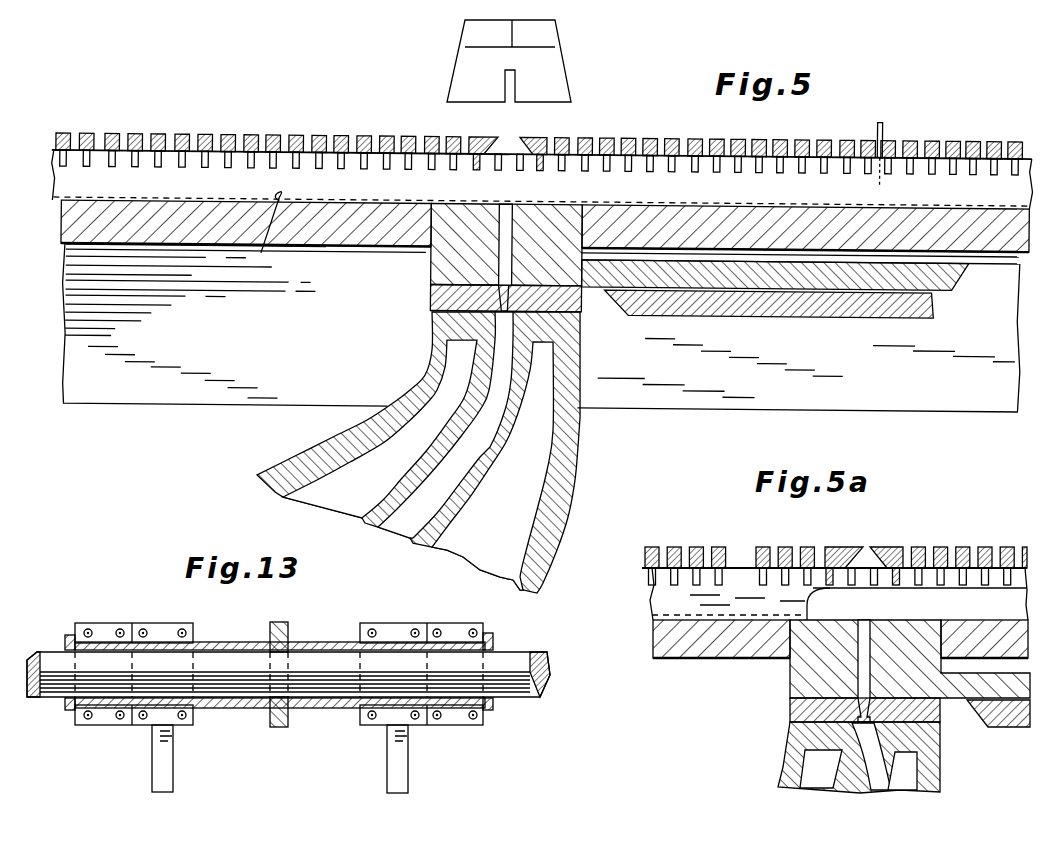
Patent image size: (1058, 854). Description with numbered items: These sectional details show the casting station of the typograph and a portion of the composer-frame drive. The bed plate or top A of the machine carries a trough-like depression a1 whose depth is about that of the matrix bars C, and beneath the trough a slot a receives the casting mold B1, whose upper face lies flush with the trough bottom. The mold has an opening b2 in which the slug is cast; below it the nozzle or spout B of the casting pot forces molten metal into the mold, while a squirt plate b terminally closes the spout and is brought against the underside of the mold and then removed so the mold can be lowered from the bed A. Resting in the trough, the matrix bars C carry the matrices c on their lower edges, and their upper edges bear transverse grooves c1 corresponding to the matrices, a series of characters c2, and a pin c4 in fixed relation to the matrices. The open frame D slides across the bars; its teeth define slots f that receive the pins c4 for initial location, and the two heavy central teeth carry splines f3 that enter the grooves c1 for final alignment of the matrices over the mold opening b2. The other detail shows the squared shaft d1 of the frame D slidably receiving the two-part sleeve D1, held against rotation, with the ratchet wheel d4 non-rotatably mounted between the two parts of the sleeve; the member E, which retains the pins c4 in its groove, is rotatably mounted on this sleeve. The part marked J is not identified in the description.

In FIG. 5, the tool / punch J is at (447, 72).
In FIG. 5, the open frame D is at (539, 146).
In FIG. 5A, the open frame D is at (779, 548).
In FIG. 5, the transversely disposed member E is at (144, 142).
In FIG. 5A, the transversely disposed member E is at (656, 550).
In FIG. 5, the slot between teeth f is at (224, 142).
In FIG. 5A, the slot between teeth f is at (969, 562).
In FIG. 5, the splines f3 is at (507, 169).
In FIG. 5A, the splines f3 is at (835, 572).
In FIG. 5, the transverse grooves c1 is at (359, 167).
In FIG. 5A, the transverse grooves c1 is at (718, 578).
In FIG. 5A, the series of characters c2 is at (887, 578).
In FIG. 5, the pin c4 is at (891, 151).
In FIG. 5, the matrix bars C is at (523, 180).
In FIG. 5A, the matrix bars C is at (653, 598).
In FIG. 5A, the matrices c is at (1025, 604).
In FIG. 5, the slot a is at (691, 246).
In FIG. 5, the trough-like depression a1 is at (246, 240).
In FIG. 5A, the trough-like depression a1 is at (790, 647).
In FIG. 5, the bed plate A is at (540, 327).
In FIG. 5A, the bed plate A is at (653, 640).
In FIG. 5, the nozzle or spout B is at (435, 398).
In FIG. 5A, the nozzle or spout B is at (940, 750).
In FIG. 5A, the mold B1 is at (790, 680).
In FIG. 5, the squirt plate b is at (484, 311).
In FIG. 5A, the squirt plate b is at (790, 716).
In FIG. 5, the opening or slot b2 is at (736, 297).
In FIG. 5A, the opening or slot b2 is at (863, 655).
In FIG. 13, the longitudinal shaft d1 is at (43, 658).
In FIG. 13, the two-part sleeve D1 is at (325, 615).
In FIG. 13, the ratchet wheel d4 is at (280, 727).